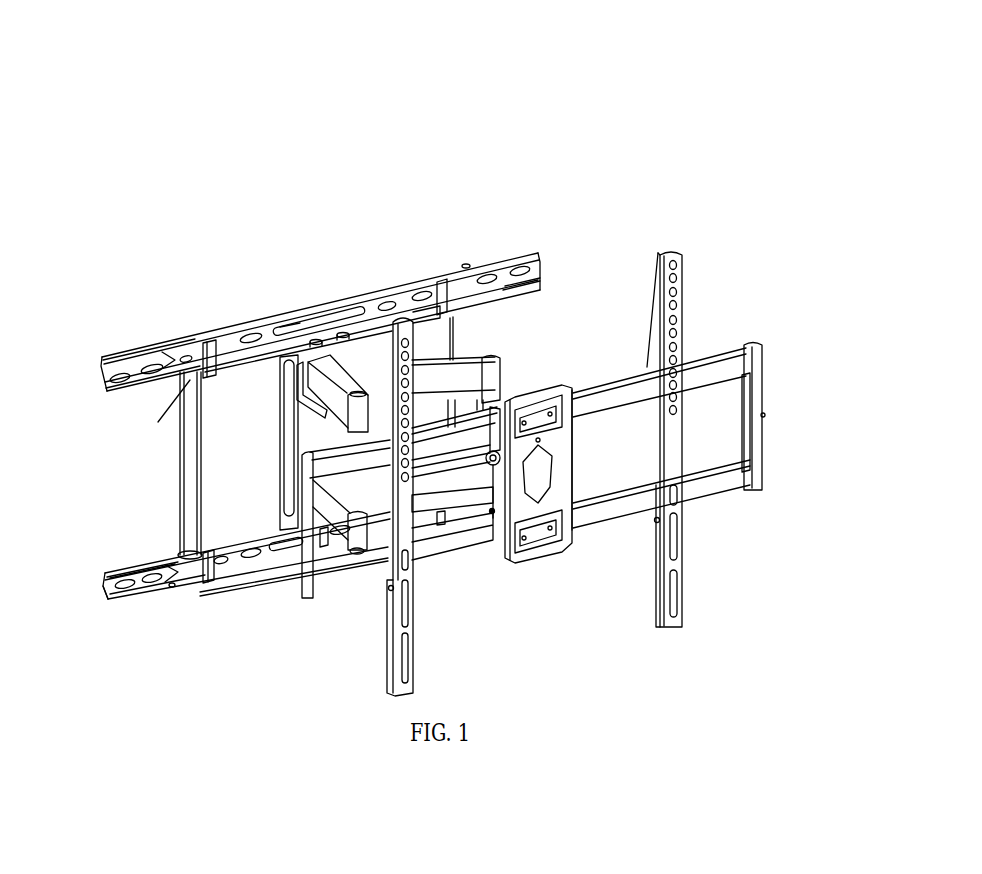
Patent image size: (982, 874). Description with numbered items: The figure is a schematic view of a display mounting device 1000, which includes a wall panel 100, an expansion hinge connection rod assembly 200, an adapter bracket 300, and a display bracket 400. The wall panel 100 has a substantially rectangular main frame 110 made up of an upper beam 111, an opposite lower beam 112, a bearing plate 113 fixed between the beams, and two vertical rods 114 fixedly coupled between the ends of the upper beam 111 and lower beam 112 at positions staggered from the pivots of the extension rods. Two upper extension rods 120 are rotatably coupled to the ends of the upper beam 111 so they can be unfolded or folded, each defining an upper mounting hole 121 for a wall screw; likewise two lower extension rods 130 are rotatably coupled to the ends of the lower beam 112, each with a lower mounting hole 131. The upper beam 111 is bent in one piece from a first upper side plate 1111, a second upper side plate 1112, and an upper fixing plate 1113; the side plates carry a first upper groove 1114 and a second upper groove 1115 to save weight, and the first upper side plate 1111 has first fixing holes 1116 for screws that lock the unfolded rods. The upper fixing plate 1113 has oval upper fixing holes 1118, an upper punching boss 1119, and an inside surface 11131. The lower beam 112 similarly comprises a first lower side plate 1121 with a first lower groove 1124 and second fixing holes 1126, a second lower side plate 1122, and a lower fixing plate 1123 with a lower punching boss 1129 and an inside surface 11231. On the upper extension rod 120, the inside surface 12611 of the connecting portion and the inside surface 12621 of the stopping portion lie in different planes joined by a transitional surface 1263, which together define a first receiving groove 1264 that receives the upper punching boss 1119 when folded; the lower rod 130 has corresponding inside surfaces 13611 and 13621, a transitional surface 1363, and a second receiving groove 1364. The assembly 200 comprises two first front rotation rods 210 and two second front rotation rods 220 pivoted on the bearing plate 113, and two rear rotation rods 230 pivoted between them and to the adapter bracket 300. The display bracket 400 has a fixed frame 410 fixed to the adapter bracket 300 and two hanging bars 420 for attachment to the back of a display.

The display mounting device 1000 is at (553, 106).
The wall panel 100 is at (305, 253).
The main frame 110 is at (355, 306).
The upper beam 111 is at (372, 302).
The first upper side plate 1111 is at (228, 333).
The second upper side plate 1112 is at (240, 373).
The upper fixing plate 1113 is at (288, 320).
The first upper groove 1114 is at (334, 306).
The second upper groove 1115 is at (263, 378).
The first fixing hole 1116 is at (208, 342).
The upper fixing hole 1118 is at (432, 297).
The upper punching boss 1119 is at (353, 305).
The lower beam 112 is at (276, 565).
The first lower side plate 1121 is at (230, 535).
The second lower side plate 1122 is at (223, 578).
The lower fixing plate 1123 is at (290, 555).
The inside surface of the lower fixing plate 11231 is at (262, 572).
The first lower groove 1124 is at (253, 528).
The second fixing hole 1126 is at (190, 560).
The lower punching boss 1129 is at (325, 572).
The bearing plate 113 is at (290, 430).
The inside surface of the upper fixing plate 11131 is at (188, 405).
The vertical rod 114 is at (180, 470).
The upper extension rod 120 is at (140, 332).
The upper mounting hole 121 is at (155, 357).
The transitional surface 1263 is at (535, 283).
The first receiving groove 1264 is at (507, 268).
The inside surface of the upper connecting portion 12611 is at (466, 268).
The inside surface of the upper stopping portion 12621 is at (545, 262).
The lower extension rod 130 is at (140, 598).
The lower mounting hole 131 is at (158, 582).
The transitional surface 1363 is at (150, 568).
The second receiving groove 1364 is at (125, 580).
The inside surface of the lower connecting portion 13611 is at (172, 590).
The inside surface of the lower stopping portion 13621 is at (104, 592).
The expansion hinge connection rod assembly 200 is at (546, 330).
The first front rotation rod 210 is at (455, 370).
The second front rotation rod 220 is at (345, 545).
The rear rotation rod 230 is at (465, 478).
The adapter bracket 300 is at (546, 382).
The display bracket 400 is at (693, 439).
The fixed frame 410 is at (600, 400).
The hanging bar 420 is at (680, 450).